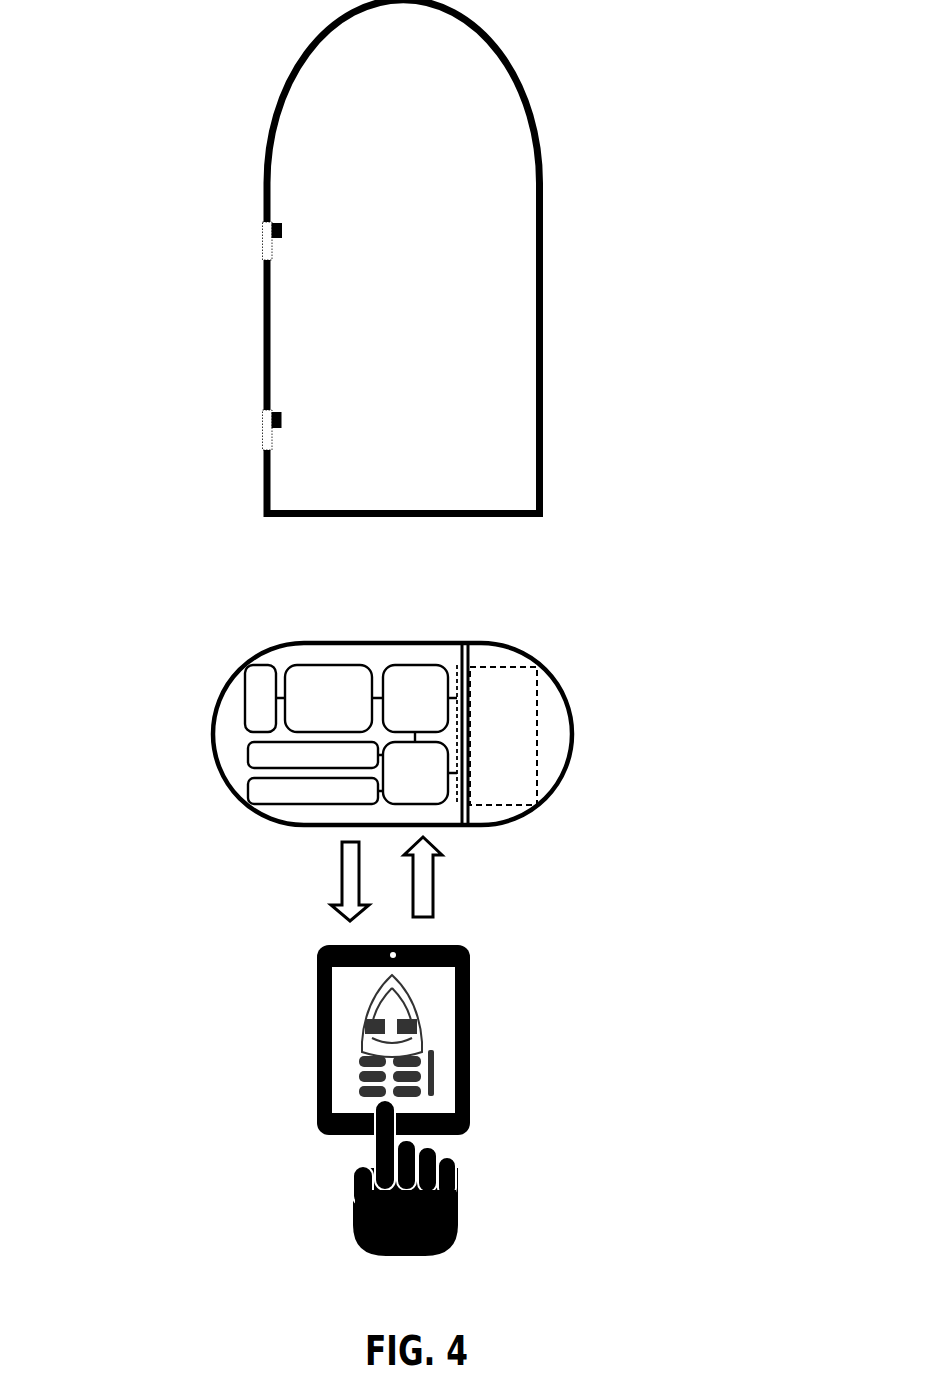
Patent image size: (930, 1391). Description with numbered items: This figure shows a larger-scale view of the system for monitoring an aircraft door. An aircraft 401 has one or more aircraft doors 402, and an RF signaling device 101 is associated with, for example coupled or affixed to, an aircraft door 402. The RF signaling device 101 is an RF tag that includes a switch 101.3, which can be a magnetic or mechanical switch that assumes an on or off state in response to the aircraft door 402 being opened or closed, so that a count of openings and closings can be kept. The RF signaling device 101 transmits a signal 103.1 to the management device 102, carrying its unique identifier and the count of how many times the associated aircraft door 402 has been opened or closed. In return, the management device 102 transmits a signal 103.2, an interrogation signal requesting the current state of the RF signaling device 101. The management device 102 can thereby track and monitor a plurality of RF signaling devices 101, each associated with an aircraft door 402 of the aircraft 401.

The aircraft 401 is at (283, 100).
The aircraft door 402 is at (262, 245).
The RF signaling device 101 is at (282, 230).
The switch 101.3 is at (528, 683).
The signal 103.1 is at (340, 883).
The signal 103.2 is at (434, 881).
The management device 102 is at (317, 1035).